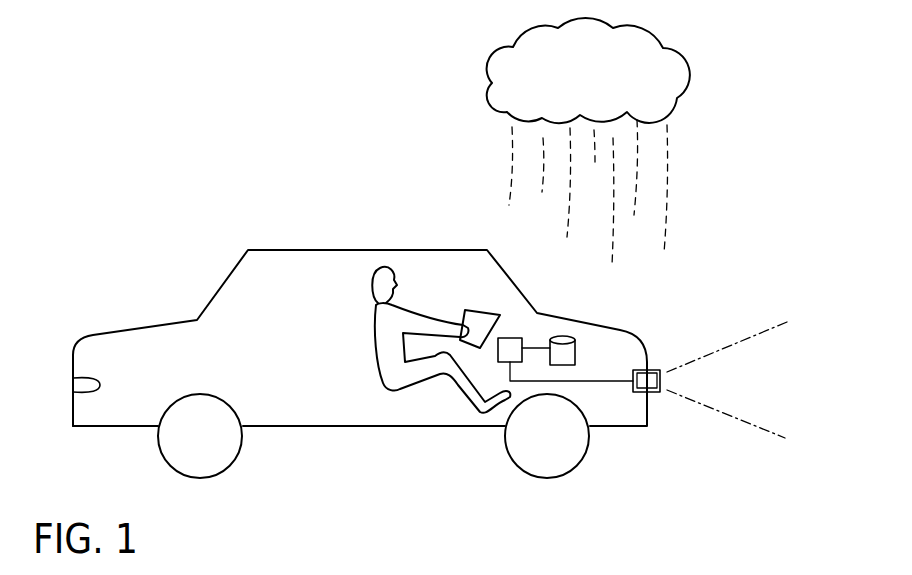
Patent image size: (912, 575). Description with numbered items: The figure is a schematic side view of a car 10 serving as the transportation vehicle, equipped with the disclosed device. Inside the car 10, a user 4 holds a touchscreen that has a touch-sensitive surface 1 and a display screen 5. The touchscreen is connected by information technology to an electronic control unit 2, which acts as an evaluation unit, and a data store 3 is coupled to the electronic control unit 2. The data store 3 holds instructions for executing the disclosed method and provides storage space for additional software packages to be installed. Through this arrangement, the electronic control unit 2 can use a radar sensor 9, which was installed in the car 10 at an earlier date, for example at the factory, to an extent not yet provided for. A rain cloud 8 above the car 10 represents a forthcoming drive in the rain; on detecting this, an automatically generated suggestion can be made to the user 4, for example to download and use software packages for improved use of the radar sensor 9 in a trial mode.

The car 10 is at (278, 198).
The user 4 is at (377, 267).
The touch-sensitive surface 1 is at (499, 285).
The display screen 5 is at (477, 318).
The electronic control unit 2 is at (513, 347).
The data store 3 is at (567, 336).
The radar sensor 9 is at (650, 385).
The rain cloud 8 is at (673, 83).